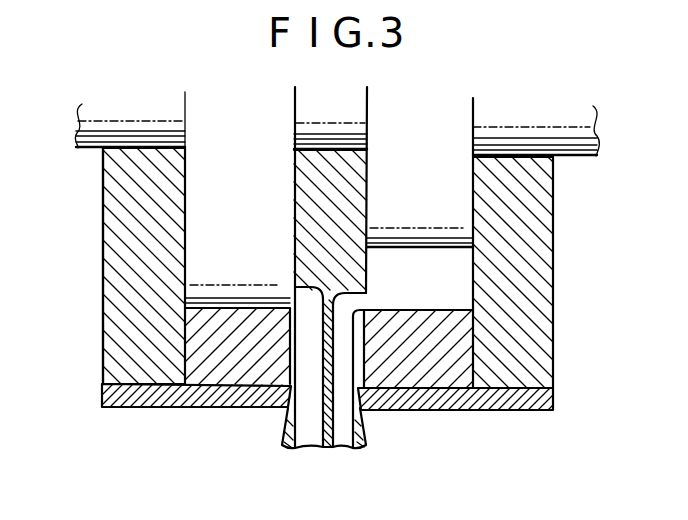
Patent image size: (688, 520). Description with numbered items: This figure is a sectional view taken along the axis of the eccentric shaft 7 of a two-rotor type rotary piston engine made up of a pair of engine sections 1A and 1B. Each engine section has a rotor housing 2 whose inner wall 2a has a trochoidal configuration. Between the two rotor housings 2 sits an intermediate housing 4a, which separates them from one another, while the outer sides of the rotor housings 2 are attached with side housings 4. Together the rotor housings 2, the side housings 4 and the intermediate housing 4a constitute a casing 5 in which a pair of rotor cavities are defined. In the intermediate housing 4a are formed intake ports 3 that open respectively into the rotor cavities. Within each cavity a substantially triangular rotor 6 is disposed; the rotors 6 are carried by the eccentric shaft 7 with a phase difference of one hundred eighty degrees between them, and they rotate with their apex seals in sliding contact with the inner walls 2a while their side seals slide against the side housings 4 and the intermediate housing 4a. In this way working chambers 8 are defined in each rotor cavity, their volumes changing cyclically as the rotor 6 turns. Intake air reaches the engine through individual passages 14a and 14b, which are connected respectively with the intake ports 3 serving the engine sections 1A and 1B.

The engine section 1A is at (100, 266).
The engine section 1B is at (558, 270).
The rotor housing 2 is at (216, 370).
The inner wall 2a is at (255, 300).
The intake port 3 is at (299, 296).
The side housing 4 is at (124, 212).
The intermediate housing 4a is at (358, 163).
The casing 5 is at (100, 232).
The rotor 6 is at (200, 172).
The eccentric shaft 7 is at (76, 127).
The working chamber 8 is at (407, 247).
The individual passage 14a is at (302, 437).
The individual passage 14b is at (350, 440).